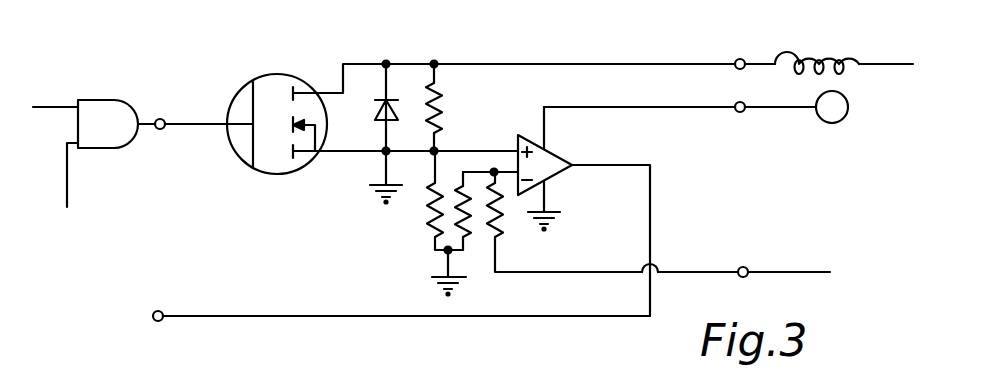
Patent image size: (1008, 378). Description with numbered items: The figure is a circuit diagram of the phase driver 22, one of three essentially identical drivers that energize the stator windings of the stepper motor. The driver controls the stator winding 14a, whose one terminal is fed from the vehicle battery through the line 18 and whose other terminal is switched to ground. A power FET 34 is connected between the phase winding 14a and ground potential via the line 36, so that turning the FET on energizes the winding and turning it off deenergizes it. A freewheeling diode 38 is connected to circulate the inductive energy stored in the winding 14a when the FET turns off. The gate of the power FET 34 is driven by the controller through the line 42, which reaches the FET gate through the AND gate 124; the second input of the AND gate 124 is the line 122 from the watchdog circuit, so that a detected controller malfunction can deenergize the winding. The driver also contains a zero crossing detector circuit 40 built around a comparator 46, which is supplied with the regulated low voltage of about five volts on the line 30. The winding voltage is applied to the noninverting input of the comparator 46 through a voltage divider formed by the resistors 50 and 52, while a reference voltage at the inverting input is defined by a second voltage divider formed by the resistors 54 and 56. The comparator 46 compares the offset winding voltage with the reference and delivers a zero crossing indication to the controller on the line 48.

The stator winding 14a is at (812, 50).
The line 18 is at (795, 272).
The phase driver 22 is at (221, 62).
The line 30 is at (783, 107).
The power FET 34 is at (298, 74).
The line 36 is at (584, 64).
The freewheeling diode 38 is at (396, 112).
The zero crossing detector circuit 40 is at (663, 175).
The line 42 is at (62, 107).
The comparator 46 is at (553, 157).
The line 48 is at (257, 316).
The resistor 50 is at (443, 108).
The resistor 52 is at (430, 225).
The resistor 54 is at (500, 220).
The resistor 56 is at (470, 228).
The line 122 is at (67, 188).
The AND gate 124 is at (137, 106).